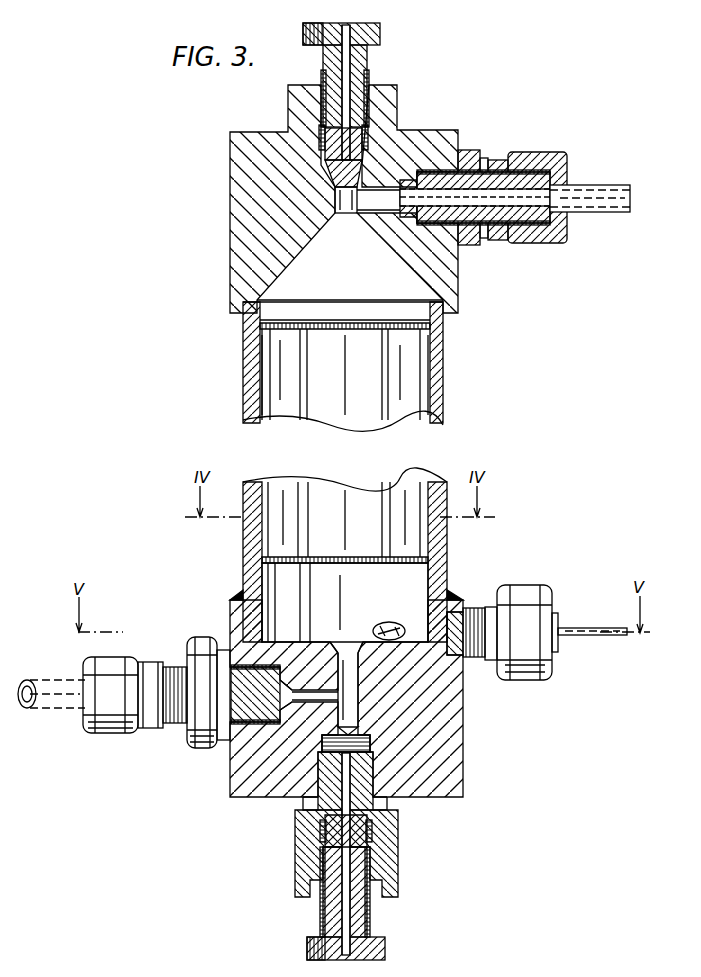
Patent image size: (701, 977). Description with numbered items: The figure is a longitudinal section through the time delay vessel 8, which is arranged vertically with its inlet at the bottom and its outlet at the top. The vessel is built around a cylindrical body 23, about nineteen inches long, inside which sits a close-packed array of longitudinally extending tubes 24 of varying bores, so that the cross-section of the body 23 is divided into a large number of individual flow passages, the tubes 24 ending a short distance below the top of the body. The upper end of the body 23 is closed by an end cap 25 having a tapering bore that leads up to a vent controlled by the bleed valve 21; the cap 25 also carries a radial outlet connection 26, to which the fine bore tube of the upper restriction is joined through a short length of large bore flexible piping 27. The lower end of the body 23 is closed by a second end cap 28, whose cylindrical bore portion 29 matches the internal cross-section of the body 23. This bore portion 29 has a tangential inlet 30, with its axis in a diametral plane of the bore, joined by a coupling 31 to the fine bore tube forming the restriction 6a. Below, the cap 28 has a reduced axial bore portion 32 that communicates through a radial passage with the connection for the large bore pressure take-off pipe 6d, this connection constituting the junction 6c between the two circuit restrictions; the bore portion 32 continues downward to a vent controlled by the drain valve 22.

The bleed valve 21 is at (353, 60).
The end cap 25 is at (275, 167).
The radial outlet connection 26 is at (400, 152).
The flexible piping 27 is at (572, 184).
The cylindrical body 23 is at (437, 370).
The delay vessel 8 is at (455, 409).
The tubes 24 is at (288, 527).
The cylindrical bore portion 29 is at (283, 628).
The tangential inlet 30 is at (400, 632).
The end cap 28 is at (433, 698).
The reduced axial bore portion 32 is at (350, 712).
The coupling 31 is at (531, 638).
The restriction 6a is at (588, 636).
The junction 6c is at (233, 747).
The pressure take-off pipe 6d is at (68, 695).
The drain valve 22 is at (367, 918).